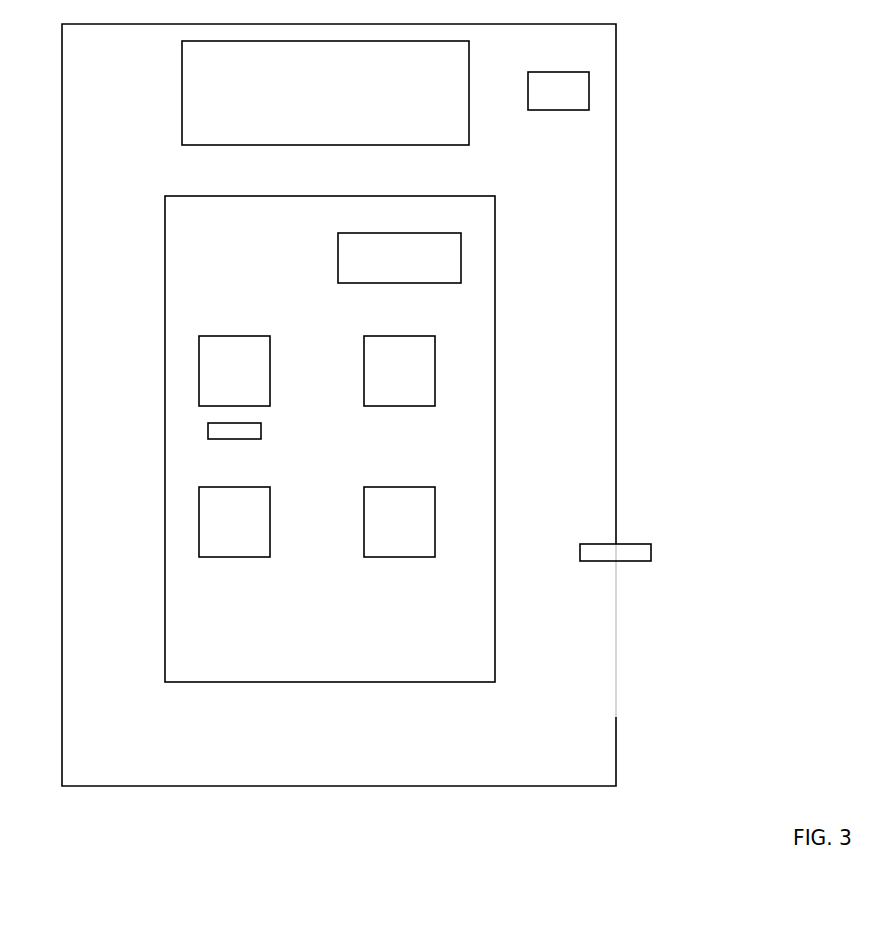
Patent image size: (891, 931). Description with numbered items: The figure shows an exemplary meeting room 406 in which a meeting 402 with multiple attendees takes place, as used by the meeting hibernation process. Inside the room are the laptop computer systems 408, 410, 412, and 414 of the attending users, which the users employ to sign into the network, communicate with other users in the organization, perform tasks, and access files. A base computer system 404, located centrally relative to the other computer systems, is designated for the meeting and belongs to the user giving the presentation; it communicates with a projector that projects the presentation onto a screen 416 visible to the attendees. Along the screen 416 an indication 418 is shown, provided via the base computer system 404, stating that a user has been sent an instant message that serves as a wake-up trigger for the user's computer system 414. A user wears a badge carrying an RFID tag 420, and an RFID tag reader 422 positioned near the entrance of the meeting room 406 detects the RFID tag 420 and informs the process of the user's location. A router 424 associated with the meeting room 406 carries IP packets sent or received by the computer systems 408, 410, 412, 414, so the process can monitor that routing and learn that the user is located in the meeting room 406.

The meeting 402 is at (182, 632).
The base computer system 404 is at (399, 258).
The meeting room 406 is at (556, 788).
The computer system 408 is at (399, 371).
The computer system 410 is at (399, 522).
The computer system 412 is at (234, 522).
The computer system 414 is at (234, 371).
The screen 416 is at (204, 146).
The indication 418 is at (360, 120).
The RFID tag 420 is at (248, 439).
The RFID tag reader 422 is at (630, 563).
The router 424 is at (558, 91).